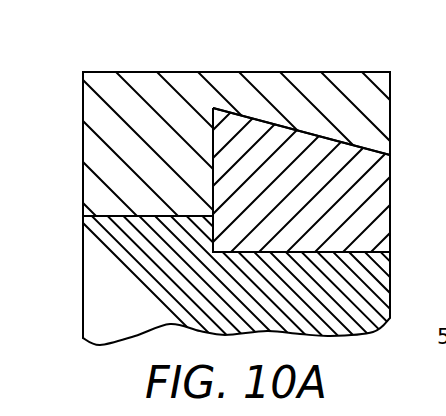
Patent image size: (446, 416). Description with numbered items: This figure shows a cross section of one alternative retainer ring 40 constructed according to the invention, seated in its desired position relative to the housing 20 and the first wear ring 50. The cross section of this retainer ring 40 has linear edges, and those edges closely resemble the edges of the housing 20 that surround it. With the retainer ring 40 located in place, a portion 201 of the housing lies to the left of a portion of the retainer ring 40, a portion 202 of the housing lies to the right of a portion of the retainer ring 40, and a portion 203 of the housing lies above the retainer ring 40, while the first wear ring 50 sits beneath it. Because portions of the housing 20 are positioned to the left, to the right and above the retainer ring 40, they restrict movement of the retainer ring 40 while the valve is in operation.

The housing 20 is at (102, 119).
The portion of the housing 201 is at (108, 156).
The portion of the housing 202 is at (367, 135).
The portion of the housing 203 is at (308, 90).
The retainer ring 40 is at (245, 143).
The first wear ring 50 is at (118, 268).